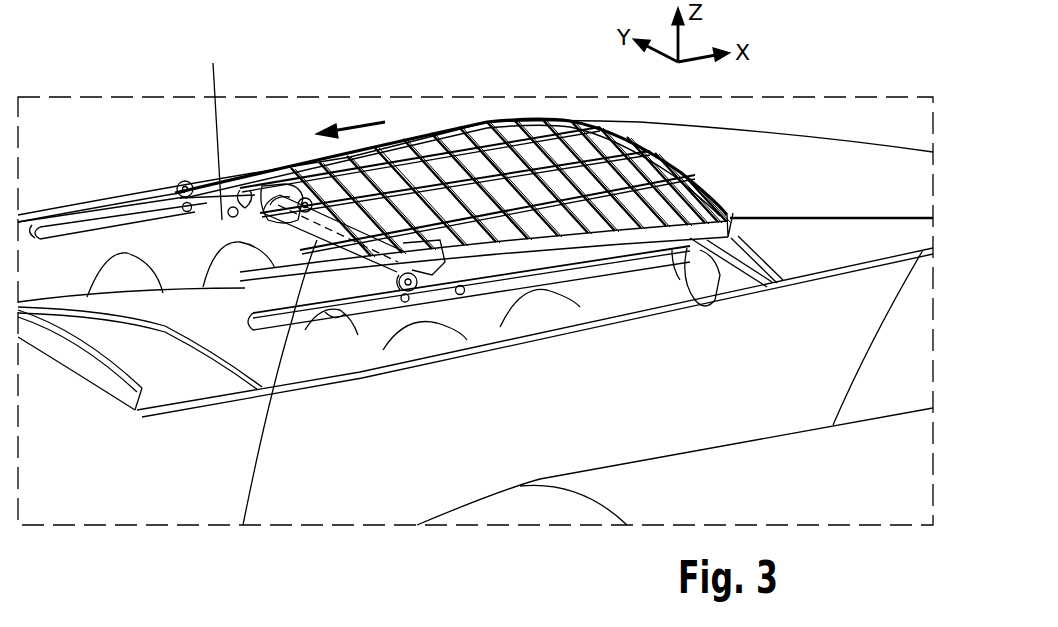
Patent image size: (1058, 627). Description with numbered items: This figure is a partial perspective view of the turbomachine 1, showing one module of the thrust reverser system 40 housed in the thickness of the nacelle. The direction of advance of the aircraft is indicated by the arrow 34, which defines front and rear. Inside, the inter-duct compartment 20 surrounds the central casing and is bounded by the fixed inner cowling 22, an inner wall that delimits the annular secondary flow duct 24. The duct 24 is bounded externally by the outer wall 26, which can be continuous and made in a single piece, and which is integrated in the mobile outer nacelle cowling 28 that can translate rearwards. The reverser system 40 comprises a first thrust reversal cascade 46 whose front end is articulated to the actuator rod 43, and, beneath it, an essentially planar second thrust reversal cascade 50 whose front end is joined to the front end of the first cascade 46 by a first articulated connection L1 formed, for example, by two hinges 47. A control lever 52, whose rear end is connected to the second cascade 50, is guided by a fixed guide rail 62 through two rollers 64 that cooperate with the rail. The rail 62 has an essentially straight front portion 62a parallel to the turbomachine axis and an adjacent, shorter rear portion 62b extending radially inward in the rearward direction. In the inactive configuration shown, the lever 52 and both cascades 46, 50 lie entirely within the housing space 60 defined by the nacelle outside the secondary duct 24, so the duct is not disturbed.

The turbomachine 1 is at (121, 132).
The inter-duct compartment 20 is at (866, 492).
The fixed inner cowling 22 is at (755, 420).
The annular secondary flow duct 24 is at (813, 382).
The outer wall 26 is at (847, 275).
The mobile outer nacelle cowling 28 is at (818, 178).
The arrow 34 is at (365, 122).
The reverser system 40 is at (408, 124).
The actuator rod 43 is at (118, 198).
The first thrust reversal cascade 46 is at (280, 195).
The hinge 47 is at (305, 200).
The second thrust reversal cascade 50 is at (727, 313).
The control lever 52 is at (220, 187).
The housing space 60 is at (505, 322).
The guide rail 62 is at (45, 228).
The front portion 62a is at (335, 318).
The clip portion 62b is at (700, 290).
The roller 64 is at (235, 208).
The first articulated connection L1 is at (211, 128).